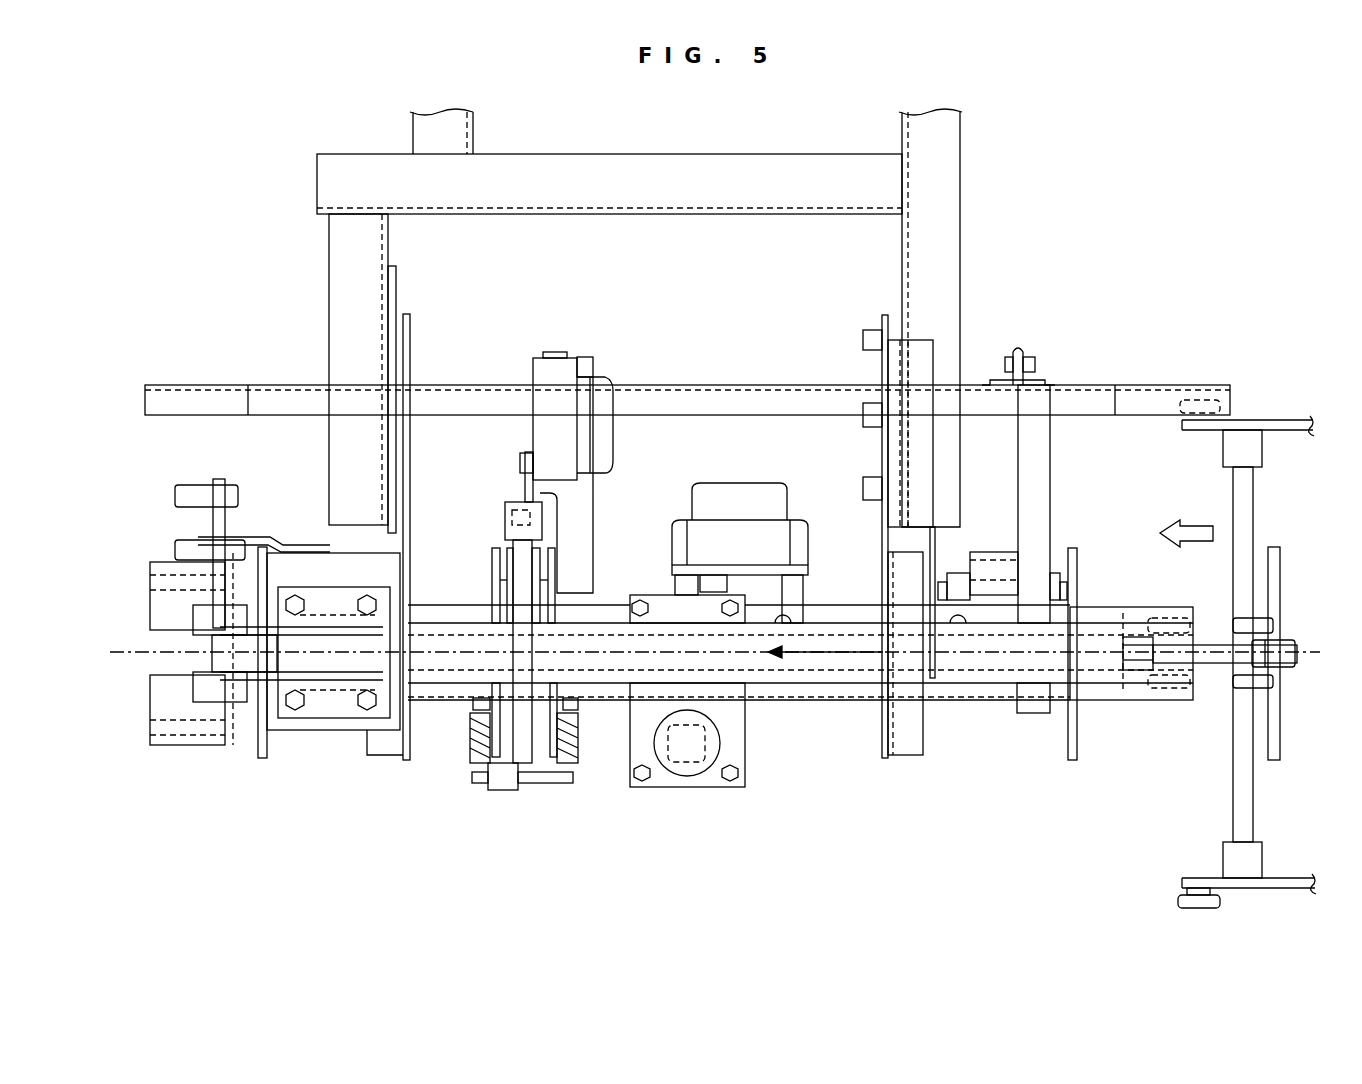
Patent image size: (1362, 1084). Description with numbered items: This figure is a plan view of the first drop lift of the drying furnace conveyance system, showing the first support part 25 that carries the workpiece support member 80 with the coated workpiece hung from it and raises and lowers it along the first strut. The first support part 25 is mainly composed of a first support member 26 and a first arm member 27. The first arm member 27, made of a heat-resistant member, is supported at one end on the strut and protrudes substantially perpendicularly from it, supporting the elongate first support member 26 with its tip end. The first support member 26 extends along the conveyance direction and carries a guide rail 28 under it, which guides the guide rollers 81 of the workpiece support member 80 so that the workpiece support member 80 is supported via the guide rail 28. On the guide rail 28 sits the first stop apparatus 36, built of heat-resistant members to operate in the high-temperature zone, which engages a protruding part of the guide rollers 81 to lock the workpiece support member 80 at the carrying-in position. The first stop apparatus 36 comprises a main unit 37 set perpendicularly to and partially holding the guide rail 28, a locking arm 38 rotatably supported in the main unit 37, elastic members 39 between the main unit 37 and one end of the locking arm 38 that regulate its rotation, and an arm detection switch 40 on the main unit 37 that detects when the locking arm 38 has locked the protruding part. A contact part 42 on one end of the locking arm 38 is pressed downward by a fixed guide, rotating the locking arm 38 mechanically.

The first support part 25 is at (1082, 318).
The first support member 26 is at (977, 665).
The first arm member 27 is at (945, 200).
The guide rail 28 is at (1135, 622).
The first stop apparatus 36 is at (603, 503).
The main unit 37 is at (547, 558).
The locking arm 38 is at (525, 740).
The elastic members 39 is at (529, 733).
The arm detection switch 40 is at (548, 425).
The contact part 42 is at (522, 811).
The workpiece support member 80 is at (1287, 648).
The guide rollers 81 is at (1158, 692).